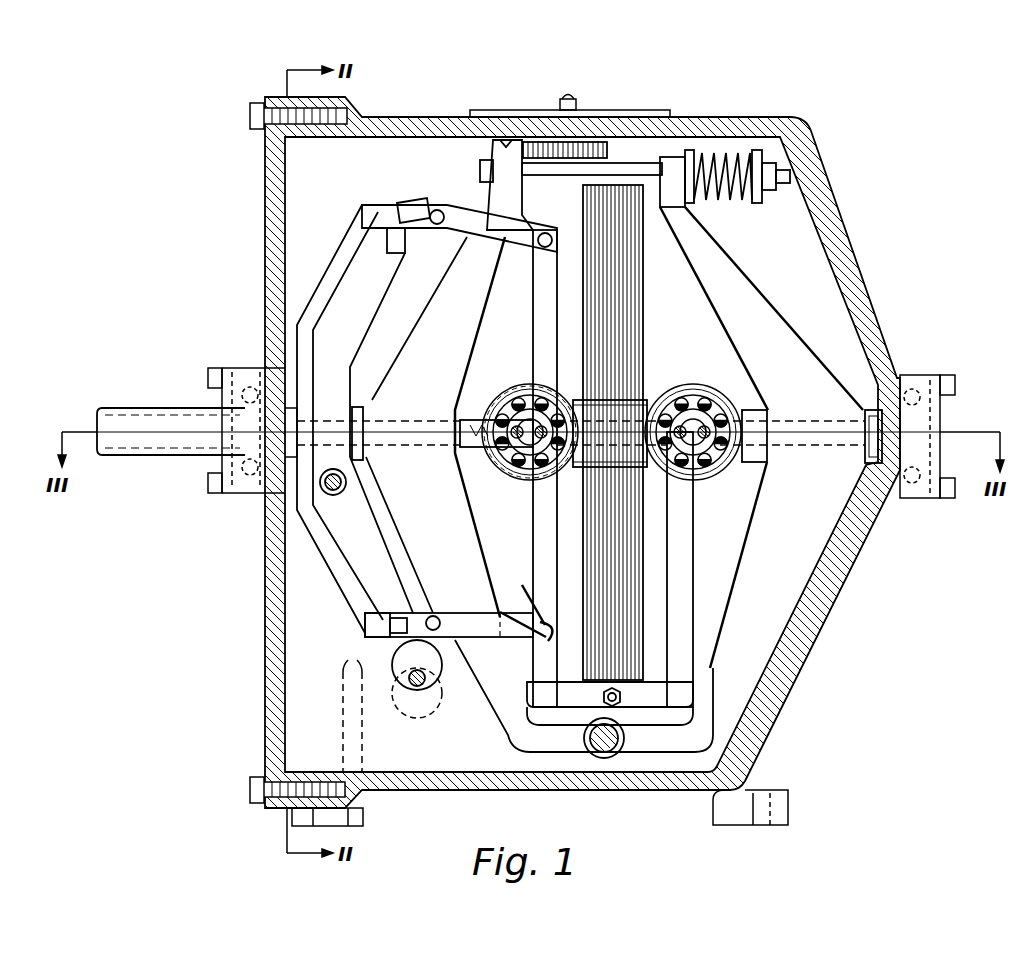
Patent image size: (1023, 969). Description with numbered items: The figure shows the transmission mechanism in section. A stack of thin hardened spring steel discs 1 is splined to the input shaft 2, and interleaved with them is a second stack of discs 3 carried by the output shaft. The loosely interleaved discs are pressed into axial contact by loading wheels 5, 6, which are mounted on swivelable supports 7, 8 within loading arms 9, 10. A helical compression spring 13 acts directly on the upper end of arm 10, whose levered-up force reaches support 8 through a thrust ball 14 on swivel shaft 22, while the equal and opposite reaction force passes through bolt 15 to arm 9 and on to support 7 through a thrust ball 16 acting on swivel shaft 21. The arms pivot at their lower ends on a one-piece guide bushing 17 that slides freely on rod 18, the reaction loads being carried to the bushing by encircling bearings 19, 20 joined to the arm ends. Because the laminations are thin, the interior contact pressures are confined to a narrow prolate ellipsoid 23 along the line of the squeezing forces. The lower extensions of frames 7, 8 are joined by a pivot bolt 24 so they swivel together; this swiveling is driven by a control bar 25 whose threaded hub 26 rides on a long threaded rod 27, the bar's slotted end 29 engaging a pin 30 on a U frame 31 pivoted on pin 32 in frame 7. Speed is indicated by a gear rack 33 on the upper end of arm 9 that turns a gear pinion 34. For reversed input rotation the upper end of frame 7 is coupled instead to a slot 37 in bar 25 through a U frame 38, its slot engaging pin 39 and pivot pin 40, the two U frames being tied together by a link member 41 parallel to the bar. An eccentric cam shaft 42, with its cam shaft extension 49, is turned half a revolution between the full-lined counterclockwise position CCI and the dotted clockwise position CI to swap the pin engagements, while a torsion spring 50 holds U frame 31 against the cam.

The stack of spring steel discs 1 is at (643, 312).
The stack of discs 3 is at (613, 432).
The input shaft 2 is at (150, 405).
The loading wheel 5 is at (527, 386).
The loading wheel 6 is at (700, 388).
The swivelable support 7 is at (470, 420).
The swivelable support 8 is at (757, 410).
The loading arm 9 is at (462, 483).
The loading arm 10 is at (763, 296).
The helical compression spring 13 is at (727, 202).
The thrust ball 14 is at (868, 410).
The bolt 15 is at (636, 165).
The thrust ball 16 is at (362, 422).
The guide bushing 17 is at (625, 688).
The rod 18 is at (624, 738).
The encircling bearing 19 is at (584, 738).
The encircling bearing 20 is at (610, 716).
The swivel shaft 21 is at (408, 421).
The swivel shaft 22 is at (790, 421).
The ellipsoid of surface pressures 23 is at (640, 400).
The pivot bolt 24 is at (603, 698).
The control bar 25 is at (375, 322).
The threaded hub 26 is at (343, 487).
The threaded rod 27 is at (360, 480).
The slotted end 29 is at (385, 617).
The pin 30 is at (400, 618).
The U frame 31 is at (470, 613).
The pin 32 is at (520, 608).
The gear rack 33 is at (493, 150).
The gear pinion 34 is at (607, 150).
The slot 37 is at (406, 248).
The U frame 38 is at (476, 215).
The slot engaging pin 39 is at (400, 204).
The pin 40 is at (545, 233).
The link member 41 is at (350, 226).
The eccentric cam shaft 42 is at (442, 665).
The cam shaft extension 49 is at (437, 690).
The torsion spring 50 is at (528, 585).
The clockwise input rotation position CI is at (420, 717).
The counterclockwise input rotation position CCI is at (395, 658).